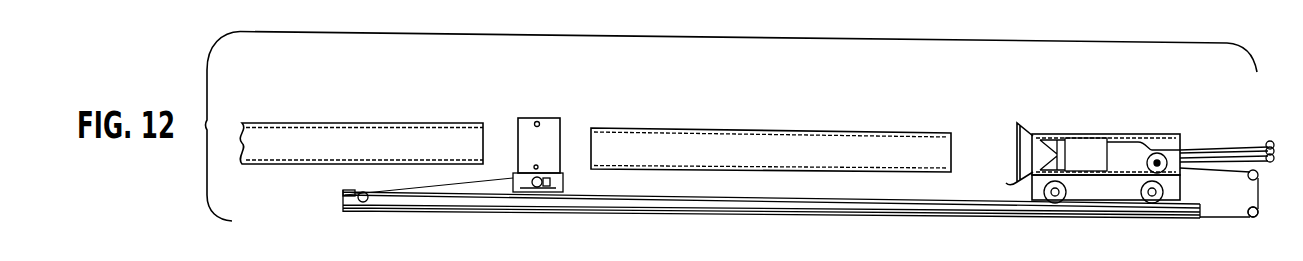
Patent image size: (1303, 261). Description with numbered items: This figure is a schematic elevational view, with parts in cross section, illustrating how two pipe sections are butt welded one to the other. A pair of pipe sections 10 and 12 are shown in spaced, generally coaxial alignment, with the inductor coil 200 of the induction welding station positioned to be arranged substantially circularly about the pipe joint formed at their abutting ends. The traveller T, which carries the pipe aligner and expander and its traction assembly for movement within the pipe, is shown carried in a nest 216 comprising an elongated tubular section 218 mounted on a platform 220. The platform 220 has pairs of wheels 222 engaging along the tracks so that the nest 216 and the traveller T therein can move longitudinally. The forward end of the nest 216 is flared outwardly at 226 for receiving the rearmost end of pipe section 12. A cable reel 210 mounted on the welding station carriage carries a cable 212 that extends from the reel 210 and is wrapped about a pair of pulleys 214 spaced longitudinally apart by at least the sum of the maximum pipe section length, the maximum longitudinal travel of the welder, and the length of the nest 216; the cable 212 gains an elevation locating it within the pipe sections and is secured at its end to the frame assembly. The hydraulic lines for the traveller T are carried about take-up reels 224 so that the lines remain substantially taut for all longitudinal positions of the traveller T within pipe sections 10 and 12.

The pipe section 10 is at (353, 123).
The pipe section 12 is at (660, 128).
The inductor coil 200 is at (537, 122).
The cable reel 210 is at (518, 172).
The cable 212 is at (438, 186).
The pulleys 214 is at (343, 194).
The nest 216 is at (1068, 136).
The elongated tubular section 218 is at (561, 172).
The platform 220 is at (1028, 184).
The wheels 222 is at (1077, 198).
The take-up reels 224 is at (1266, 141).
The flared forward end 226 is at (1016, 127).
The traveller T is at (1090, 150).